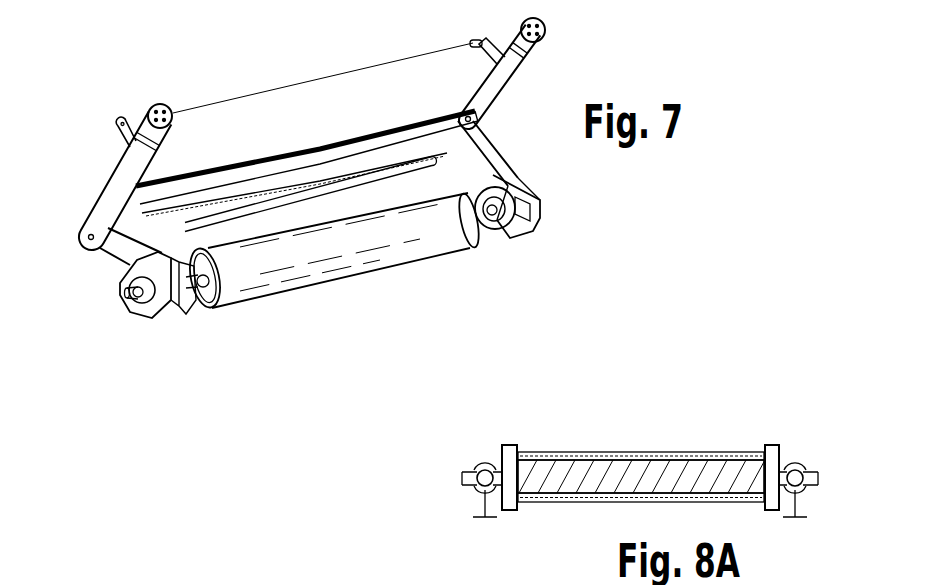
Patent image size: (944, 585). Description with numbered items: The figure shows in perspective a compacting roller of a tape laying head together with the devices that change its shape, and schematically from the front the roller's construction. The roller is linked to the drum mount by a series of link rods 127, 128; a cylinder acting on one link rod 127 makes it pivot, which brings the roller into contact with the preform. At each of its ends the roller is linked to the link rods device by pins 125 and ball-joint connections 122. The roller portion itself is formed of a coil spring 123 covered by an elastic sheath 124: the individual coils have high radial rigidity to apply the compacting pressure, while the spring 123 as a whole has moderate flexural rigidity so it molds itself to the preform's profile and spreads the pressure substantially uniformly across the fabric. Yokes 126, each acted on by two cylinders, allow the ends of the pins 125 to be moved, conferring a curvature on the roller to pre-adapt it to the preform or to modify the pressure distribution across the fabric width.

In FIG. 7, the ball-joint connection 122 is at (487, 230).
In FIG. 8A, the ball-joint connection 122 is at (488, 465).
In FIG. 8A, the coil spring 123 is at (613, 480).
In FIG. 8A, the elastic sheath 124 is at (568, 500).
In FIG. 7, the pin 125 is at (130, 298).
In FIG. 8A, the pin 125 is at (813, 467).
In FIG. 7, the yoke 126 is at (150, 313).
In FIG. 7, the link rod 127 is at (122, 180).
In FIG. 7, the link rod 128 is at (112, 252).